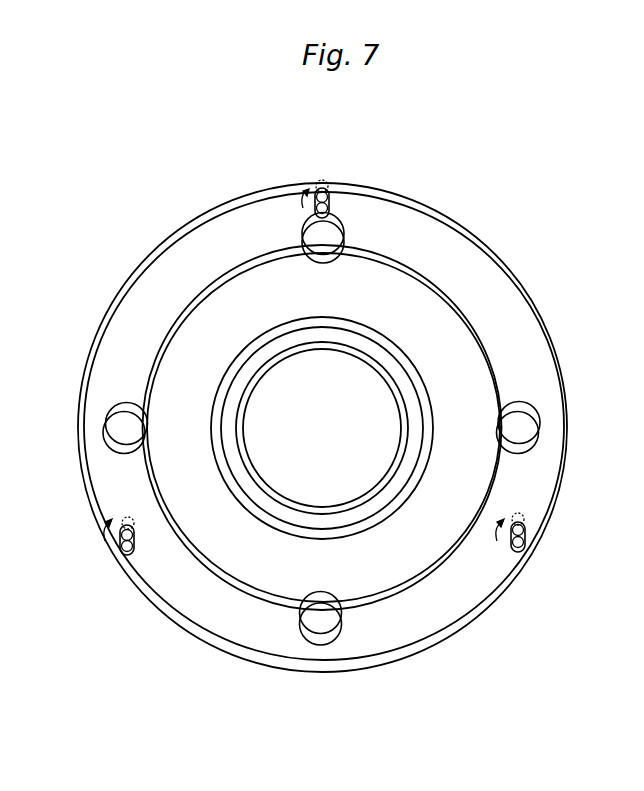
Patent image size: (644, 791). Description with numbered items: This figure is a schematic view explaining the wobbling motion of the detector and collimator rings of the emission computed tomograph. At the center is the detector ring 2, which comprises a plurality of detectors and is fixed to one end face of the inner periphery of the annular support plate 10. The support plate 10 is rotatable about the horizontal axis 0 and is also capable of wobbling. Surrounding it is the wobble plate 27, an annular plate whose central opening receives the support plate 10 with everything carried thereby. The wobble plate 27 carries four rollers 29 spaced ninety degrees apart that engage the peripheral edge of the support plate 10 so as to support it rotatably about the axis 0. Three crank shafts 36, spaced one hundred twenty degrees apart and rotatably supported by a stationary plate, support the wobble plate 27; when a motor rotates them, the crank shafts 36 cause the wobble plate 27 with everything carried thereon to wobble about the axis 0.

The wobble plate 27 is at (471, 259).
The annular support plate 10 is at (450, 330).
The detector ring 2 is at (427, 387).
The rollers 29 is at (337, 221).
The crank shafts 36 is at (328, 200).
The horizontal axis 0 is at (321, 432).